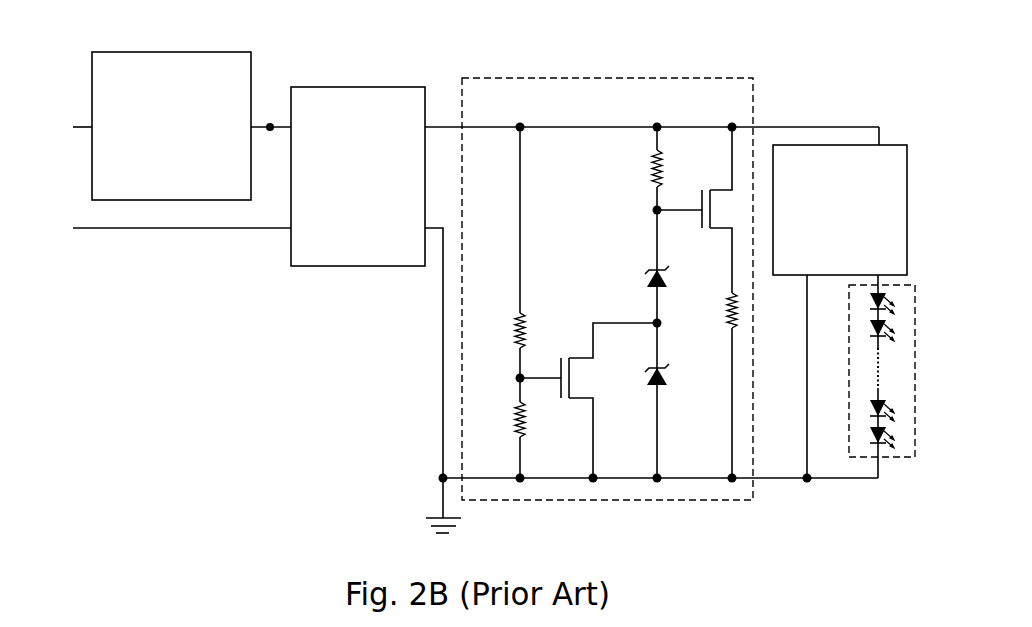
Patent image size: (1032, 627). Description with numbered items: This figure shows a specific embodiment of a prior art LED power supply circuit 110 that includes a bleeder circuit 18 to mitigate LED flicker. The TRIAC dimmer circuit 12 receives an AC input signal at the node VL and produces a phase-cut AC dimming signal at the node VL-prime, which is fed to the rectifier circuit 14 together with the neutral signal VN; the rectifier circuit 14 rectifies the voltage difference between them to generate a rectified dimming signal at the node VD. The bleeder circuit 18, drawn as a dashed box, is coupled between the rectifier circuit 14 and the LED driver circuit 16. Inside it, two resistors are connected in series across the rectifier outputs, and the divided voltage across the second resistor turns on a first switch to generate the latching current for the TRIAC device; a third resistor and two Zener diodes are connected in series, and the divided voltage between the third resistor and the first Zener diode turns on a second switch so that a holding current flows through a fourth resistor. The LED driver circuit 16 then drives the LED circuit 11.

The LED power supply circuit 110 is at (848, 51).
The TRIAC dimmer circuit 12 is at (159, 188).
The rectifier circuit 14 is at (346, 220).
The LED driver circuit 16 is at (828, 268).
The bleeder circuit 18 is at (732, 115).
The LED circuit 11 is at (898, 458).